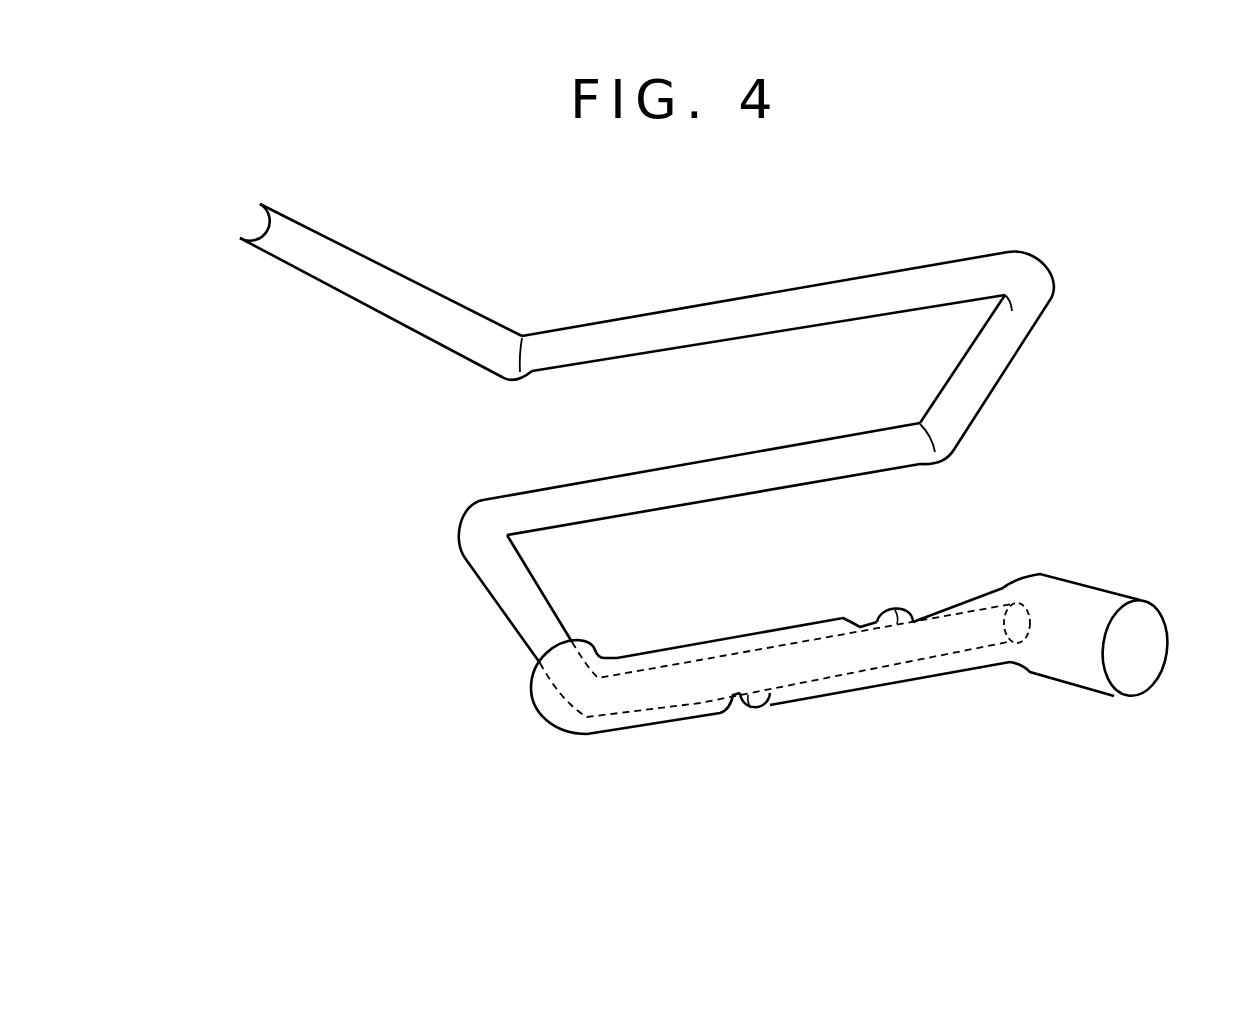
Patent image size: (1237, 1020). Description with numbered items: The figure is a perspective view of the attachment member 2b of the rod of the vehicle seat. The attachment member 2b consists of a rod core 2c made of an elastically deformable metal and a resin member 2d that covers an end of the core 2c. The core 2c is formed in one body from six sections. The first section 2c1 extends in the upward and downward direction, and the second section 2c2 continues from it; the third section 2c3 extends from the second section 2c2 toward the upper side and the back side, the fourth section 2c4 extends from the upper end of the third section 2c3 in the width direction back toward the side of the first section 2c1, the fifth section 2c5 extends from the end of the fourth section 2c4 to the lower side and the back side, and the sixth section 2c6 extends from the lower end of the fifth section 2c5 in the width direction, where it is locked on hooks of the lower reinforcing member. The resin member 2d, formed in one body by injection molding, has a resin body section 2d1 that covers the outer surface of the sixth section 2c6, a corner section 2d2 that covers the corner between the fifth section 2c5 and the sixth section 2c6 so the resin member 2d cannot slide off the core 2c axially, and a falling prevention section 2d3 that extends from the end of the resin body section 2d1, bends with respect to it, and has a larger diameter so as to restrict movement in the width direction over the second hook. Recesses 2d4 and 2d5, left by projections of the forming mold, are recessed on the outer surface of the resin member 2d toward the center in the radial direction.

The attachment member 2b is at (371, 240).
The core 2c is at (431, 279).
The first section 2c1 is at (323, 268).
The second section 2c2 is at (718, 330).
The third section 2c3 is at (982, 385).
The fourth section 2c4 is at (733, 486).
The fifth section 2c5 is at (503, 597).
The sixth section 2c6 is at (772, 660).
The resin member 2d is at (540, 712).
The resin body section 2d1 is at (657, 718).
The corner section 2d2 is at (588, 646).
The falling prevention section 2d3 is at (1085, 602).
The recess 2d4 is at (748, 703).
The recess 2d5 is at (872, 622).